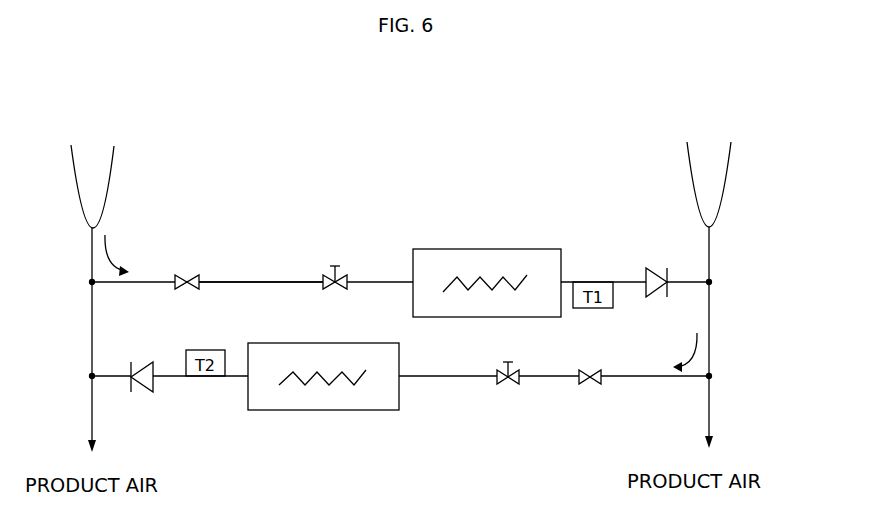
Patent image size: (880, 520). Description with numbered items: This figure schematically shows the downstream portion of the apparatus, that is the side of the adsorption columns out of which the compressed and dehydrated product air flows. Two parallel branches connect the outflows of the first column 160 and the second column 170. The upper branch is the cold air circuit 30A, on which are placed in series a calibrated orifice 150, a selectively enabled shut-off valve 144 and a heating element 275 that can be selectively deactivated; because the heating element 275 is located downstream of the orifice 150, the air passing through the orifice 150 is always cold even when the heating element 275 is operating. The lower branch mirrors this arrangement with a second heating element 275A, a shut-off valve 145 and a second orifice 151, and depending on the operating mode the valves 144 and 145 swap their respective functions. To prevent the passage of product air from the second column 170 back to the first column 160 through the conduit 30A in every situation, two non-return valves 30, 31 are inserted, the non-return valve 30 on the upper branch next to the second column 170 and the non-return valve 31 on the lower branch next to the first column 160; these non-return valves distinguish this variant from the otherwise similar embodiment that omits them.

The first column 160 is at (92, 176).
The second column 170 is at (709, 173).
The orifice 150 is at (189, 269).
The cold air circuit 30A is at (261, 296).
The shut-off valve 144 is at (337, 266).
The heating element 275 is at (487, 270).
The non-return valve 30 is at (656, 268).
The non-return valve 31 is at (139, 364).
The heating element 275A is at (323, 389).
The shut-off valve 145 is at (510, 386).
The orifice 151 is at (590, 390).